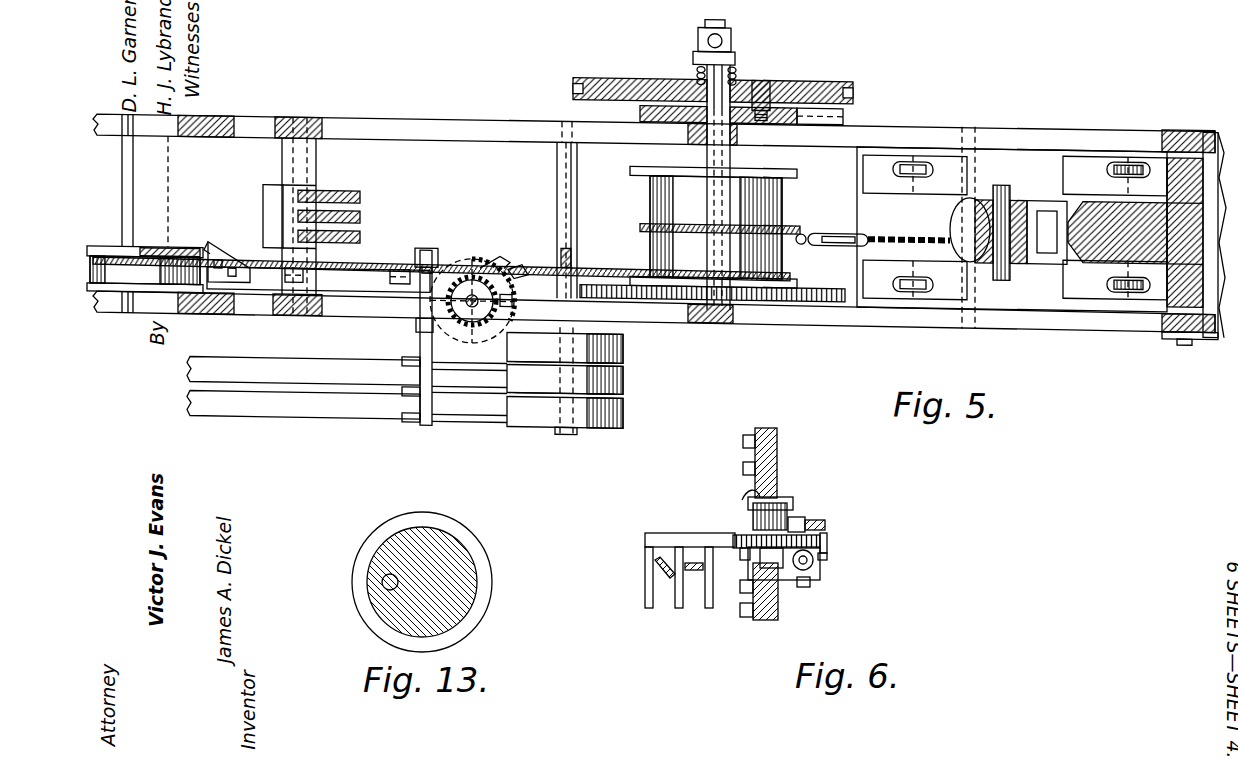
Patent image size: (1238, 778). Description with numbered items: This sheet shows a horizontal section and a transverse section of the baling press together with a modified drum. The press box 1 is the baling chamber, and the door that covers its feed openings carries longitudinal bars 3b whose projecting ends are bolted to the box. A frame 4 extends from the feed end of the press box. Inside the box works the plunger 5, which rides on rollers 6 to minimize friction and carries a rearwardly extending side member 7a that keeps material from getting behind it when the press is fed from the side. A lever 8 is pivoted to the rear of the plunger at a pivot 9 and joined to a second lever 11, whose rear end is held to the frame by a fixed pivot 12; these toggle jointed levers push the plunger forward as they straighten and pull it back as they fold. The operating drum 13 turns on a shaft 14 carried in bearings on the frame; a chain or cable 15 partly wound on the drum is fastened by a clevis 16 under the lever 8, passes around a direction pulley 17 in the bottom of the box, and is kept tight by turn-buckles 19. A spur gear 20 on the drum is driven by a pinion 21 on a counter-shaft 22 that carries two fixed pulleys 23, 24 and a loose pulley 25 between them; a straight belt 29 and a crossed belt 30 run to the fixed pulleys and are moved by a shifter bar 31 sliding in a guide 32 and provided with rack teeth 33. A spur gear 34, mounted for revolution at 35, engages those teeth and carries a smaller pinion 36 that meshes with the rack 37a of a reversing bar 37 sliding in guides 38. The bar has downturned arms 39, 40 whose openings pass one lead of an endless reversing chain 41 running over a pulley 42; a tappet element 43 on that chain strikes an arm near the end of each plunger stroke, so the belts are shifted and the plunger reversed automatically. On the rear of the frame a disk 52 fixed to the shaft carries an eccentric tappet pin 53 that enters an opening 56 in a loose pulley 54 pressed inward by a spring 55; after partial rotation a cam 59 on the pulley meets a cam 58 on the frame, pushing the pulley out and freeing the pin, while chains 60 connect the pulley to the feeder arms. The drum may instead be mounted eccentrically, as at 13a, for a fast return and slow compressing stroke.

In FIG. 5, the press box 1 is at (1200, 235).
In FIG. 5, the bars 3b is at (1192, 322).
In FIG. 5, the frame 4 is at (410, 113).
In FIG. 6, the frame 4 is at (778, 455).
In FIG. 5, the plunger 5 is at (1190, 114).
In FIG. 5, the rollers 6 is at (933, 156).
In FIG. 5, the side member 7a is at (1010, 283).
In FIG. 5, the lever 8 is at (975, 198).
In FIG. 5, the pivot 9 is at (1003, 172).
In FIG. 5, the lever 11 is at (362, 190).
In FIG. 5, the fixed pivot 12 is at (318, 158).
In FIG. 5, the operating drum 13 is at (652, 190).
In FIG. 13, the eccentrically mounted drum 13a is at (388, 606).
In FIG. 5, the shaft 14 is at (731, 72).
In FIG. 5, the chain or cable 15 is at (642, 218).
In FIG. 5, the clevis 16 is at (950, 232).
In FIG. 5, the direction pulley 17 is at (915, 224).
In FIG. 5, the turn-buckles 19 is at (840, 236).
In FIG. 5, the spur gear 20 is at (823, 292).
In FIG. 5, the pinion 21 is at (600, 283).
In FIG. 5, the counter-shaft 22 is at (557, 215).
In FIG. 5, the fixed pulley 23 is at (625, 340).
In FIG. 5, the fixed pulley 24 is at (622, 410).
In FIG. 5, the loose pulley 25 is at (625, 372).
In FIG. 5, the straight belt 29 is at (297, 363).
In FIG. 6, the straight belt 29 is at (695, 572).
In FIG. 5, the crossed belt 30 is at (328, 404).
In FIG. 6, the crossed belt 30 is at (655, 570).
In FIG. 5, the shifter bar 31 is at (427, 421).
In FIG. 6, the shifter bar 31 is at (670, 534).
In FIG. 5, the guide 32 is at (438, 250).
In FIG. 6, the guide 32 is at (815, 578).
In FIG. 5, the rack teeth 33 is at (462, 320).
In FIG. 6, the rack teeth 33 is at (745, 556).
In FIG. 5, the spur gear 34 is at (480, 336).
In FIG. 6, the spur gear 34 is at (827, 556).
In FIG. 5, the mounting 35 is at (510, 296).
In FIG. 6, the mounting 35 is at (795, 500).
In FIG. 5, the pinion 36 is at (505, 270).
In FIG. 6, the pinion 36 is at (750, 522).
In FIG. 5, the reversing bar 37 is at (428, 243).
In FIG. 6, the reversing bar 37 is at (826, 525).
In FIG. 5, the rack 37a is at (478, 262).
In FIG. 6, the rack 37a is at (752, 503).
In FIG. 5, the guides 38 is at (292, 280).
In FIG. 6, the guides 38 is at (806, 522).
In FIG. 5, the downturned arm 39 is at (209, 240).
In FIG. 6, the downturned arm 39 is at (814, 562).
In FIG. 5, the downturned arm 40 is at (572, 252).
In FIG. 5, the reversing chain 41 is at (335, 258).
In FIG. 5, the pulley 42 is at (108, 247).
In FIG. 5, the tappet element 43 is at (238, 256).
In FIG. 6, the tappet element 43 is at (802, 587).
In FIG. 5, the disk 52 is at (688, 125).
In FIG. 5, the tappet pin 53 is at (790, 97).
In FIG. 5, the pulley 54 is at (642, 72).
In FIG. 5, the spring 55 is at (736, 70).
In FIG. 5, the opening 56 is at (770, 76).
In FIG. 5, the cam 58 is at (845, 105).
In FIG. 5, the cam 59 is at (850, 86).
In FIG. 5, the chains 60 is at (578, 88).